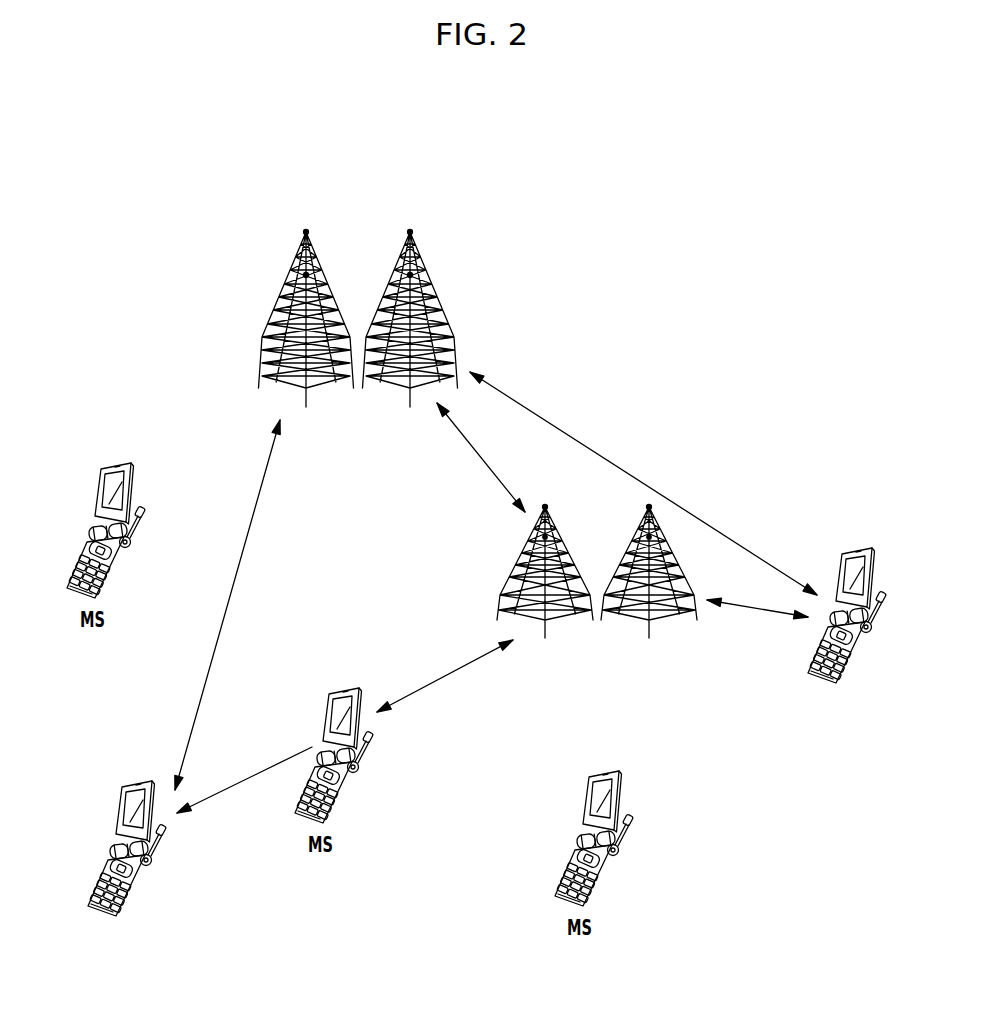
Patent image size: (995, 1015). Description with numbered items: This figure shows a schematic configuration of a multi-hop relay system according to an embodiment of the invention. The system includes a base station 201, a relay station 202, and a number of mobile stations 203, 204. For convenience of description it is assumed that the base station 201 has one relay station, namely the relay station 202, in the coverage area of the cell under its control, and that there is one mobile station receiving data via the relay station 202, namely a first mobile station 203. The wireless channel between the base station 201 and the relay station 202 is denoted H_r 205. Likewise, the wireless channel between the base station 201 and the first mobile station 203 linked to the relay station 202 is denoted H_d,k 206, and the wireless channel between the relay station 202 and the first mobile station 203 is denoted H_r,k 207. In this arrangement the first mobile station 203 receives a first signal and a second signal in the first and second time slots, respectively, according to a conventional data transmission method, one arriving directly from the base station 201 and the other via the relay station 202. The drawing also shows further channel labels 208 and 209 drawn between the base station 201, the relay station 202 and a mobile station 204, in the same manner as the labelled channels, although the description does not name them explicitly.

The base station 201 is at (358, 337).
The relay station 202 is at (597, 589).
The first mobile station 203 is at (840, 631).
The mobile station 204 is at (119, 864).
The wireless channel H_r 205 is at (497, 457).
The wireless channel H_d,k 206 is at (643, 483).
The wireless channel H_r,k 207 is at (757, 629).
The direct channel between BS and MS i (H_d,i) 208 is at (224, 605).
The relay channel between MS i and RS (H_r,i) 209 is at (445, 675).